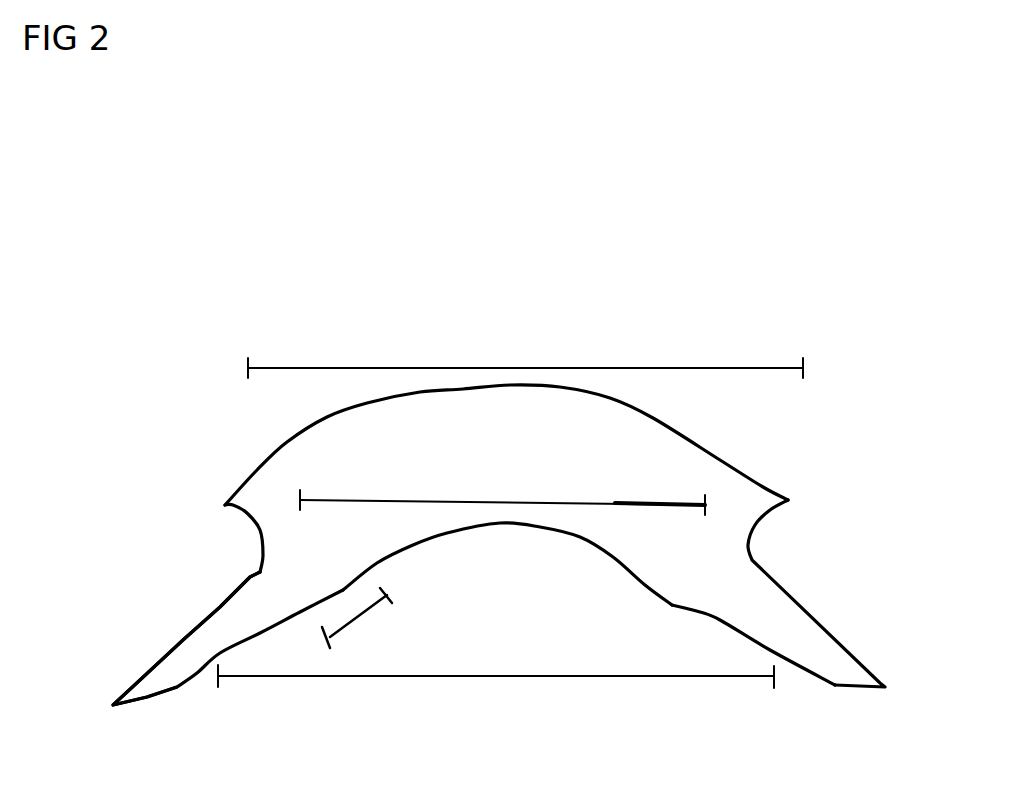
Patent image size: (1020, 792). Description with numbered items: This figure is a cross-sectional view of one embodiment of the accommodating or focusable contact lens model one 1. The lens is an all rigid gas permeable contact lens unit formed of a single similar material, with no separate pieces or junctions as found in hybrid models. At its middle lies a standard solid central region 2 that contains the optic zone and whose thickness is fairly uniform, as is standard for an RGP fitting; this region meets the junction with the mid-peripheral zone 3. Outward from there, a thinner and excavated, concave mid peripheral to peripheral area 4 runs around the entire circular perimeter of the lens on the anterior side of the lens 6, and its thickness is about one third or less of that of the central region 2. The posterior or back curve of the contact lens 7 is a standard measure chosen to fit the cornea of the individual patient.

The accommodating or focusable contact lens model one 1 is at (860, 440).
The central region 2 is at (502, 494).
The mid-peripheral zone junction 3 is at (357, 618).
The mid peripheral to peripheral area 4 is at (186, 636).
The anterior side of the lens 6 is at (525, 350).
The posterior or back curve of the contact lens 7 is at (496, 694).